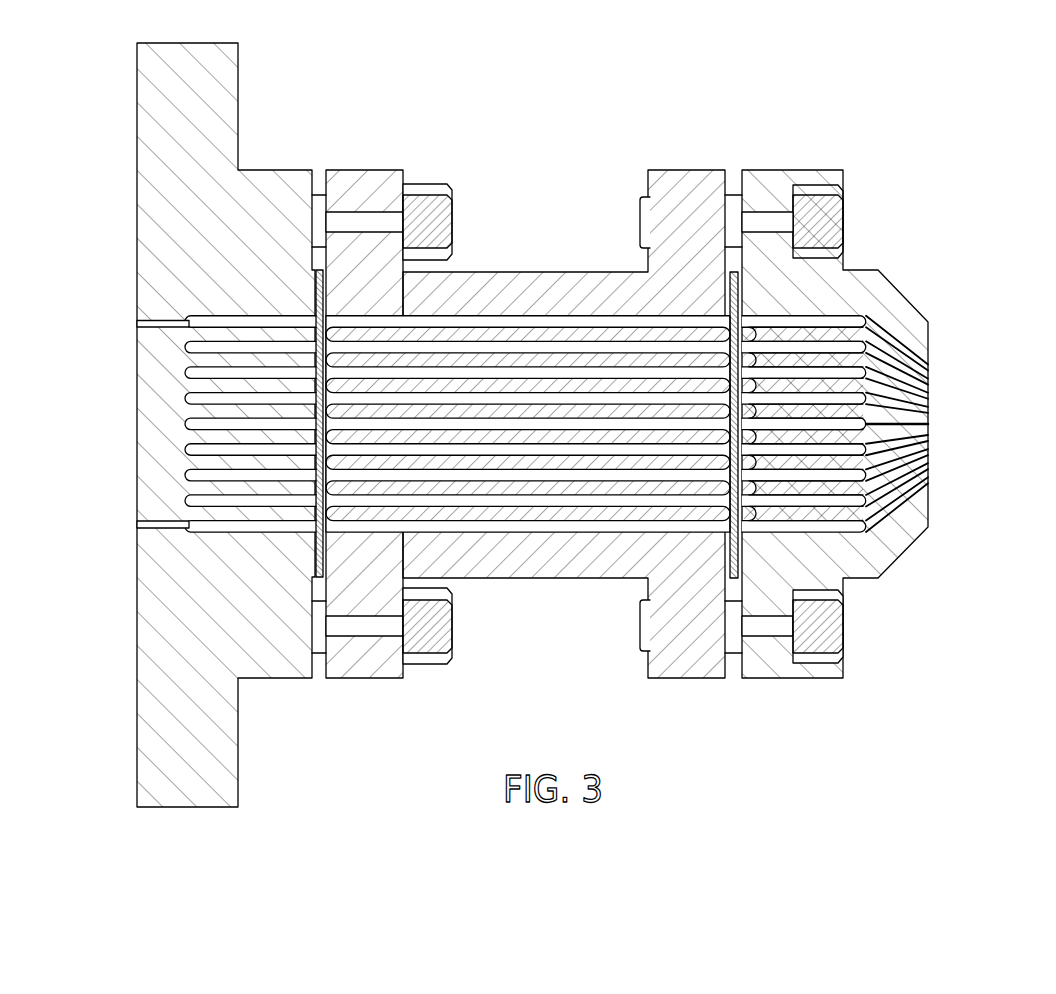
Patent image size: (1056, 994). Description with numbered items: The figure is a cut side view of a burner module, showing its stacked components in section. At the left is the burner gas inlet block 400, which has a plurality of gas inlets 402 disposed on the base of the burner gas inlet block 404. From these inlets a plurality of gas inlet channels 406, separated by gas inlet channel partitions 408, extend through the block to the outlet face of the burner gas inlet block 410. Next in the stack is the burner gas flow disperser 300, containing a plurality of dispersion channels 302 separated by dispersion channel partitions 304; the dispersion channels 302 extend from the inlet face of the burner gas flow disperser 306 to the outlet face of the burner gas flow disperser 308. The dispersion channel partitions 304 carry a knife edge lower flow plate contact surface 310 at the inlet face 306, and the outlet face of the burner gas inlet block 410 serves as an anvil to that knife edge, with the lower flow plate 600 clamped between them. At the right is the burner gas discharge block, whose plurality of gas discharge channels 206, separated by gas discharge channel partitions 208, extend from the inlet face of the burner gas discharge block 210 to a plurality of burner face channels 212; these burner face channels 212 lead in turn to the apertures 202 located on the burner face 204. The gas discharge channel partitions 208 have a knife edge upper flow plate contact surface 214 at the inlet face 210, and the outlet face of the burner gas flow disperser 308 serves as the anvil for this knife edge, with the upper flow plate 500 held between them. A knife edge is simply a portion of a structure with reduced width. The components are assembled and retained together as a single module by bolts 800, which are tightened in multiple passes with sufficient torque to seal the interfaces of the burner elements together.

The apertures 202 is at (928, 375).
The burner face 204 is at (932, 493).
The gas discharge channels 206 is at (857, 324).
The gas discharge channel partitions 208 is at (848, 360).
The inlet face of the burner gas discharge block 210 is at (735, 681).
The burner face channels 212 is at (928, 425).
The knife edge upper flow plate contact surface 214 is at (793, 519).
The burner gas flow disperser 300 is at (673, 181).
The dispersion channels 302 is at (613, 528).
The dispersion channel partitions 304 is at (548, 513).
The inlet face of the burner gas flow disperser 306 is at (323, 173).
The outlet face of the burner gas flow disperser 308 is at (886, 389).
The knife edge lower flow plate contact surface 310 is at (334, 361).
The burner gas inlet block 400 is at (236, 742).
The gas inlets 402 is at (137, 323).
The base of the burner gas inlet block 404 is at (168, 425).
The gas inlet channels 406 is at (237, 320).
The gas inlet channel partitions 408 is at (197, 385).
The outlet face of the burner gas inlet block 410 is at (314, 679).
The upper flow plate 500 is at (803, 592).
The lower flow plate 600 is at (317, 557).
The bolts 800 is at (451, 212).